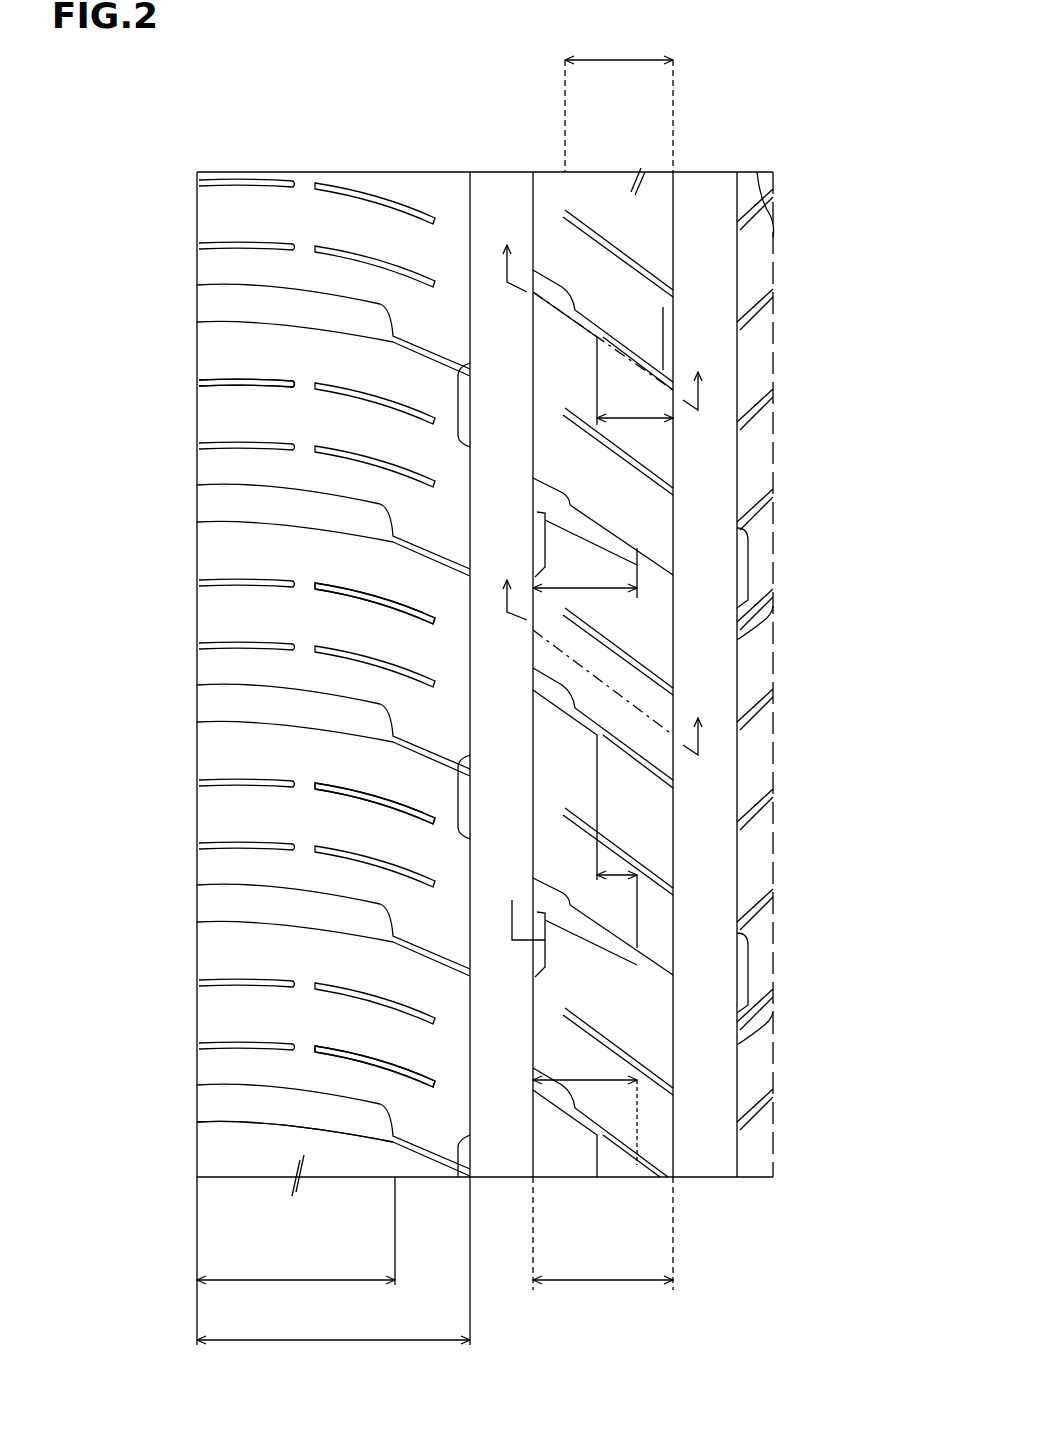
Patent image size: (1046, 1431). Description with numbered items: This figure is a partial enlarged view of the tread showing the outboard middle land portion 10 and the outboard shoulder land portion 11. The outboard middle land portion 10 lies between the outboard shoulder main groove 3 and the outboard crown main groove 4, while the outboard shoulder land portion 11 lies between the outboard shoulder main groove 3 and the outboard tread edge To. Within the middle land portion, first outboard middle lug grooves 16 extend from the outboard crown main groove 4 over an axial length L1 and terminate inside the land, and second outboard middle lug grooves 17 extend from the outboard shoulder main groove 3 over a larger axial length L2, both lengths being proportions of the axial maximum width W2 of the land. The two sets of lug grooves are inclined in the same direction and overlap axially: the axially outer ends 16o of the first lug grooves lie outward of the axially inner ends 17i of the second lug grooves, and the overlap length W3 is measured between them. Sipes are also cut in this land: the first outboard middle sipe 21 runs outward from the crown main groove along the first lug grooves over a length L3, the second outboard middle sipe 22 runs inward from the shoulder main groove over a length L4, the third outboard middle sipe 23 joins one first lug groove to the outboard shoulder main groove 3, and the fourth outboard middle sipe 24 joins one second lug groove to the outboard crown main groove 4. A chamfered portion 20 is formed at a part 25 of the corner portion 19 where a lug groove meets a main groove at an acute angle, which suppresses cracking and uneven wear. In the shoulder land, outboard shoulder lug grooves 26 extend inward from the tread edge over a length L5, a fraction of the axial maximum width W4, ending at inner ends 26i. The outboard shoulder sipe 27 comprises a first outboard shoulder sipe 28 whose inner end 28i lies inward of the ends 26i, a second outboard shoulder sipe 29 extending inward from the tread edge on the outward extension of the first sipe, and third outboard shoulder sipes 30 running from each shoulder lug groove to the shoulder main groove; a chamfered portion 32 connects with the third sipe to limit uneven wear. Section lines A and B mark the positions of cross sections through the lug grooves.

The outboard shoulder main groove 3 is at (490, 195).
The outboard crown main groove 4 is at (700, 195).
The outboard middle land portion 10 is at (595, 270).
The outboard shoulder land portion 11 is at (312, 218).
The first outboard middle lug groove 16 is at (690, 325).
The axially outer end of first outboard middle lug groove 16o is at (597, 745).
The second outboard middle lug groove 17 is at (600, 523).
The axially inner end of second outboard middle lug groove 17i is at (637, 948).
The corner portion 19 is at (533, 452).
The chamfered portion 20 is at (538, 542).
The first outboard middle sipe 21 is at (598, 305).
The second outboard middle sipe 22 is at (575, 1120).
The third outboard middle sipe 23 is at (633, 343).
The fourth outboard middle sipe 24 is at (640, 570).
The part of corner portion 25 is at (582, 527).
The outboard shoulder lug groove 26 is at (285, 302).
The axially inner end of outboard shoulder lug groove 26i is at (385, 1143).
The outboard shoulder sipe 27 is at (375, 596).
The first outboard shoulder sipe 28 is at (430, 1125).
The axially inner end of first outboard shoulder sipe 28i is at (468, 1165).
The second outboard shoulder sipe 29 is at (245, 582).
The third outboard shoulder sipe 30 is at (400, 748).
The chamfered portion 32 is at (467, 378).
The outboard tread edge To is at (197, 212).
The section line A- A is at (603, 311).
The section line B- B is at (603, 650).
The axial length of first outboard middle lug groove L1 is at (553, 543).
The axial length of second outboard middle lug groove L2 is at (600, 600).
The axial length of first outboard middle sipe L3 is at (619, 100).
The axial length of second outboard middle sipe L4 is at (600, 1063).
The axial length of outboard shoulder lug groove L5 is at (296, 1231).
The axial maximum width of outboard middle land portion W2 is at (603, 1261).
The overlap length W3 is at (637, 875).
The axial maximum width of outboard shoulder land portion W4 is at (333, 1322).